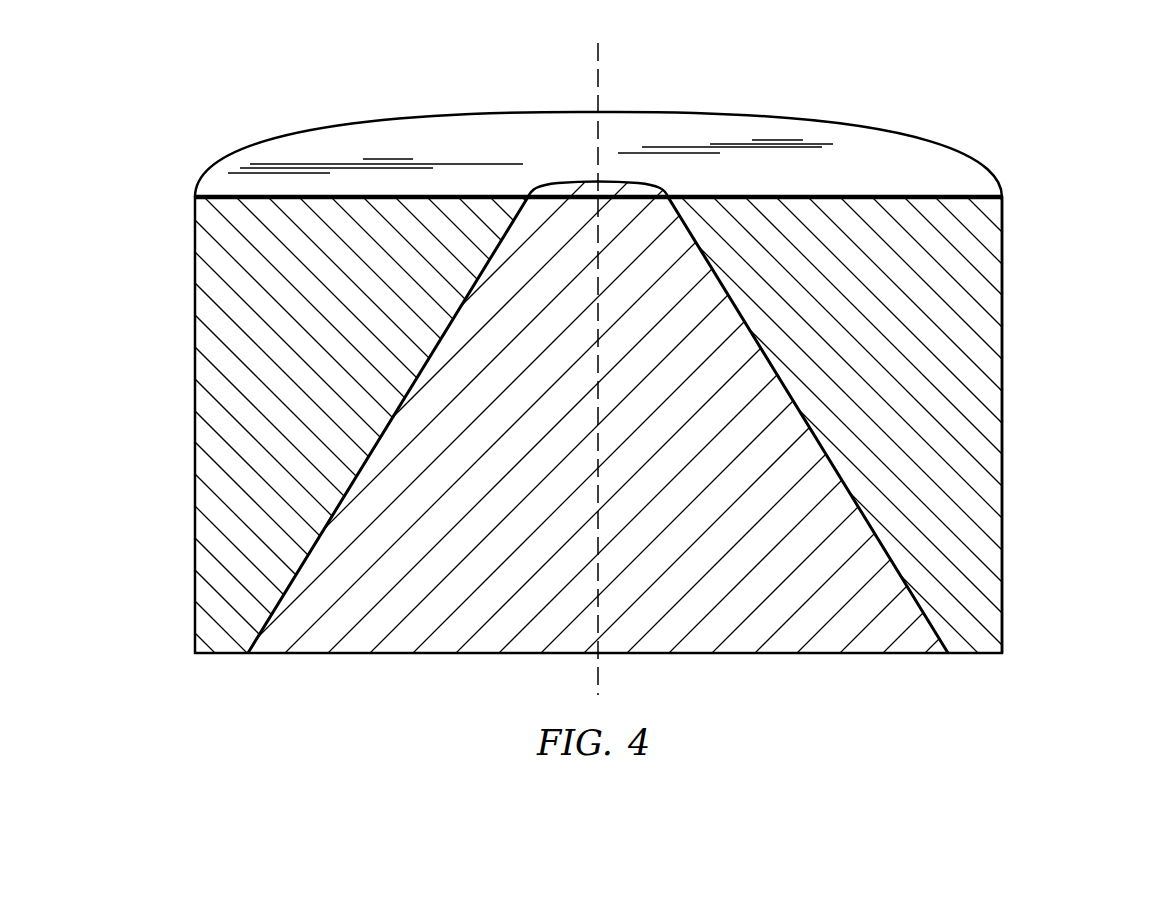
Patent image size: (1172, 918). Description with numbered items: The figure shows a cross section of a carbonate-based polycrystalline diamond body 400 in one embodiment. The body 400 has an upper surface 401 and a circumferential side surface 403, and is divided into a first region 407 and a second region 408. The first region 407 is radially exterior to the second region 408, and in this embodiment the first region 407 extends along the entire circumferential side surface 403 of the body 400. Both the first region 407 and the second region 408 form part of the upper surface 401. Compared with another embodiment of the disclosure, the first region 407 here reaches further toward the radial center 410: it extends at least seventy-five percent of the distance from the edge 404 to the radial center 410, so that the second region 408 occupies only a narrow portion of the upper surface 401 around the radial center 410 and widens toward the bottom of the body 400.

The body 400 is at (246, 134).
The upper surface 401 is at (918, 178).
The edge 404 is at (1015, 198).
The first region 407 is at (972, 264).
The circumferential side surface 403 is at (1016, 462).
The second region 408 is at (872, 595).
The radial center 410 is at (600, 72).